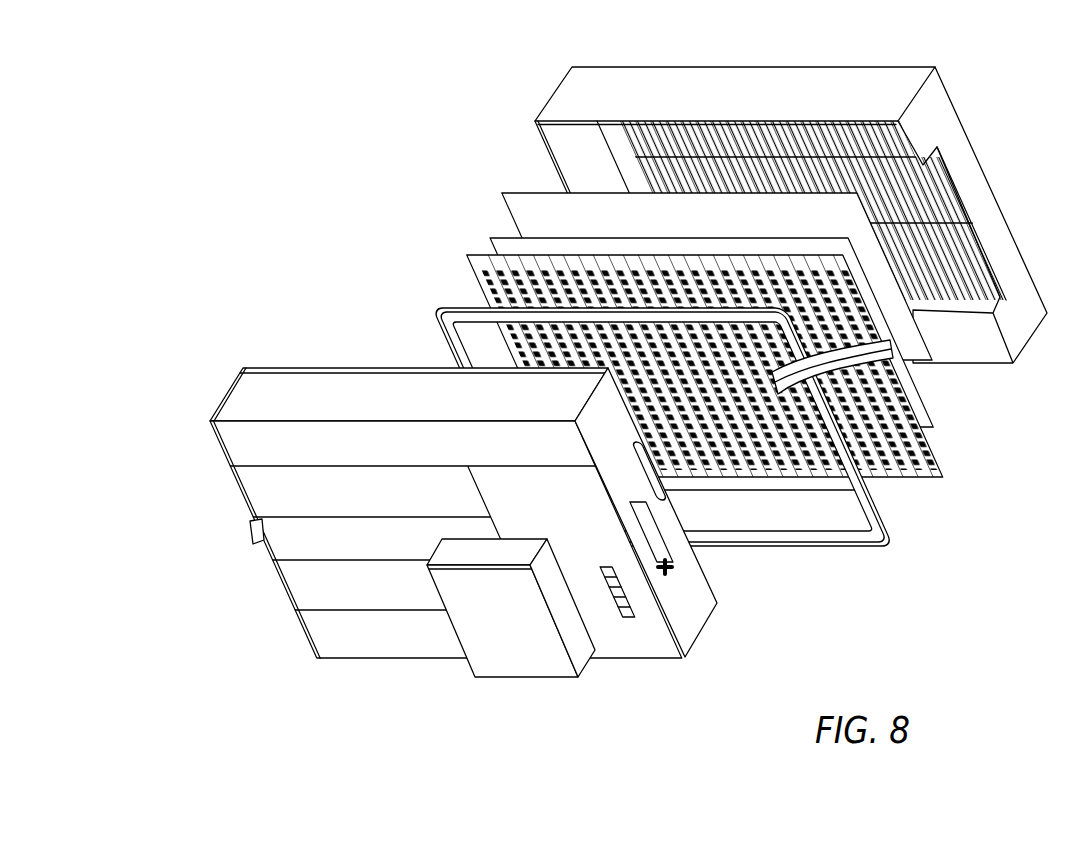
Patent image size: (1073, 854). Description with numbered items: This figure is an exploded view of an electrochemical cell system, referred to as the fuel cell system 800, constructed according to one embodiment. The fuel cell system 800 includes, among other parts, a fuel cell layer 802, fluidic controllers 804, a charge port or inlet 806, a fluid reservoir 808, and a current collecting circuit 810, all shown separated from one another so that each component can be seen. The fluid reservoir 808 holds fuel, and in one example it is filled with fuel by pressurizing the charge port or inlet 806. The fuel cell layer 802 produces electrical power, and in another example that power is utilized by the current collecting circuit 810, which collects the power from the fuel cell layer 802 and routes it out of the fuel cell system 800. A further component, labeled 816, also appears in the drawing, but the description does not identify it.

The fuel cell system 800 is at (617, 372).
The fuel cell layer 802 is at (949, 492).
The fluidic controllers 804 is at (713, 594).
The charge port or inlet 806 is at (249, 531).
The fluid reservoir 808 is at (261, 369).
The current collecting circuit 810 is at (892, 350).
The cell plate 816 is at (470, 271).